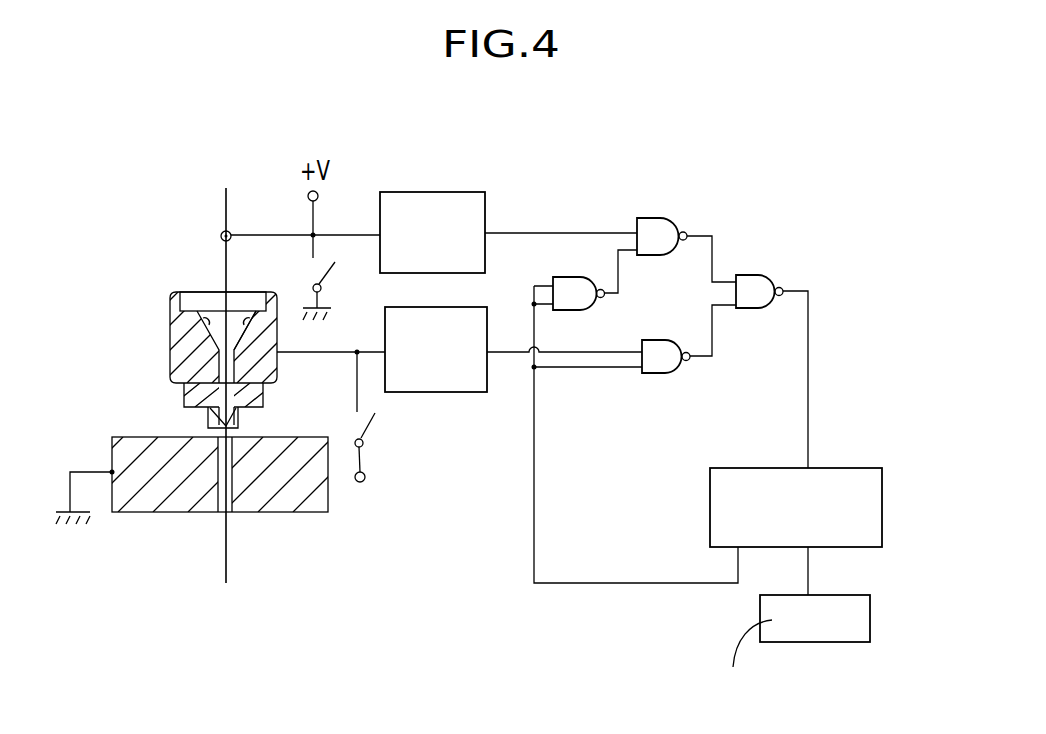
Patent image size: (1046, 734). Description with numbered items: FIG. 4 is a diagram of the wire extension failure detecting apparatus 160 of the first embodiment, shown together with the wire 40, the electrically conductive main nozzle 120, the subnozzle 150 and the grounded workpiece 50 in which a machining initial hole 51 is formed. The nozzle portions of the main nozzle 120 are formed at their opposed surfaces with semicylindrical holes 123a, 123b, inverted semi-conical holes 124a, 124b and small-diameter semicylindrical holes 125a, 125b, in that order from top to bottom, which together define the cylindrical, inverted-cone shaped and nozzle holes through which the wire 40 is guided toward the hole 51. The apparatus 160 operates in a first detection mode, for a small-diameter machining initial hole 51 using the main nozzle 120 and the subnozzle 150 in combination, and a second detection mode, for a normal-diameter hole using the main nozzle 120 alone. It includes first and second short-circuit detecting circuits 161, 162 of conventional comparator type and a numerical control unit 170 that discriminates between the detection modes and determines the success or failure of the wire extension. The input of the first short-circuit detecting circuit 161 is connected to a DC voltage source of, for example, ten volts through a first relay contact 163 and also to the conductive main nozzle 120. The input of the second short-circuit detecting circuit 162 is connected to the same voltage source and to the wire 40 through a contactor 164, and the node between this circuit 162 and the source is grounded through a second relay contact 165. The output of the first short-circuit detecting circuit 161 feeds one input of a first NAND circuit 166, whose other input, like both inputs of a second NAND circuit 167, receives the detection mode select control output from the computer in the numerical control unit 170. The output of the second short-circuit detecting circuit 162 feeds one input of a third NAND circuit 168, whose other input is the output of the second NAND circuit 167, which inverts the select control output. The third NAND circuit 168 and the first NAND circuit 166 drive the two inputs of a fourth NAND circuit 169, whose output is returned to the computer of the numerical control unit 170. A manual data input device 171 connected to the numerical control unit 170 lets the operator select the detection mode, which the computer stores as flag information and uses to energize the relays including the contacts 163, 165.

The wire 40 is at (219, 228).
The workpiece 50 is at (304, 496).
The machining initial hole 51 is at (216, 472).
The main nozzle 120 is at (172, 338).
The semicylindrical hole 123a is at (186, 297).
The semicylindrical hole 123b is at (264, 305).
The inverted semi-conical hole 124a is at (176, 358).
The inverted semi-conical hole 124b is at (277, 355).
The small-diameter semicylindrical hole 125a is at (217, 413).
The small-diameter semicylindrical hole 125b is at (240, 410).
The subnozzle 150 is at (186, 400).
The wire extension failure detecting apparatus 160 is at (610, 168).
The first short-circuit detecting circuit 161 is at (455, 292).
The second short-circuit detecting circuit 162 is at (438, 192).
The first relay contact 163 is at (382, 428).
The contactor 164 is at (233, 241).
The second relay contact 165 is at (333, 283).
The first NAND circuit 166 is at (665, 373).
The second NAND circuit 167 is at (588, 310).
The third NAND circuit 168 is at (666, 218).
The fourth NAND circuit 169 is at (750, 275).
The numerical control unit 170 is at (833, 468).
The manual data input device 171 is at (834, 595).